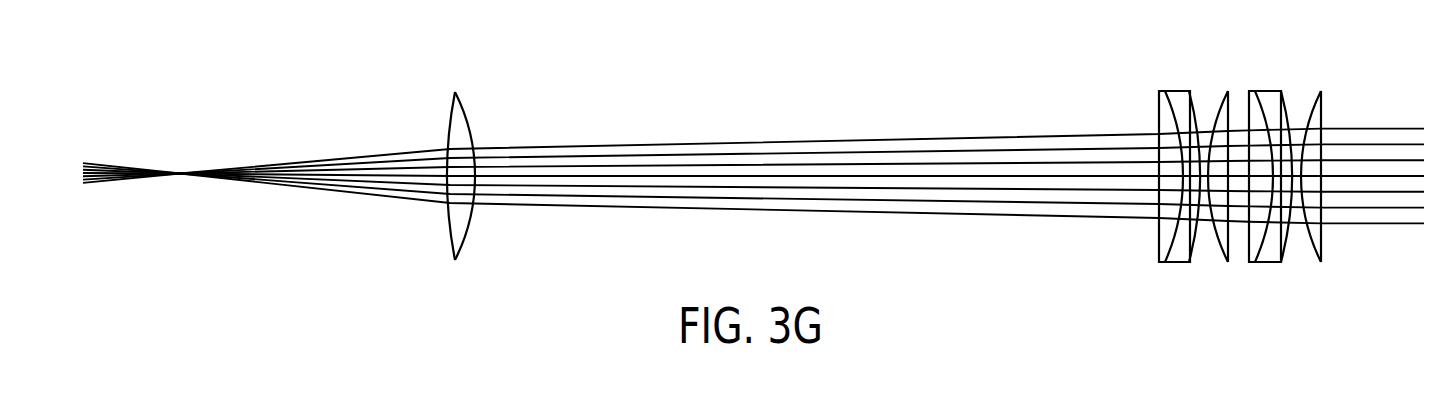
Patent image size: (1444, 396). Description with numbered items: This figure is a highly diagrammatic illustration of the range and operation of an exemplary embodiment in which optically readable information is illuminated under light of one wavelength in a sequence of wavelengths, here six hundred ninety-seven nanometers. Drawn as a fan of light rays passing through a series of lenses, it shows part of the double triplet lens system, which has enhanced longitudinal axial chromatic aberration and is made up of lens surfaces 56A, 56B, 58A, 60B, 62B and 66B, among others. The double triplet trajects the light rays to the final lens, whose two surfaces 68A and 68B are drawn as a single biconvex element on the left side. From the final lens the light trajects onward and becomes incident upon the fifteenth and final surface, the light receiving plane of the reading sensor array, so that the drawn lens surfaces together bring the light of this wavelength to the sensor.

The lens surface 68A is at (473, 132).
The lens surface 68B is at (447, 138).
The lens surface 66B is at (1157, 240).
The lens surface 62B is at (1215, 105).
The lens surface 60B is at (1189, 184).
The lens surface 58A is at (1290, 107).
The lens surface 56A is at (1331, 185).
The lens surface 56B is at (1305, 242).